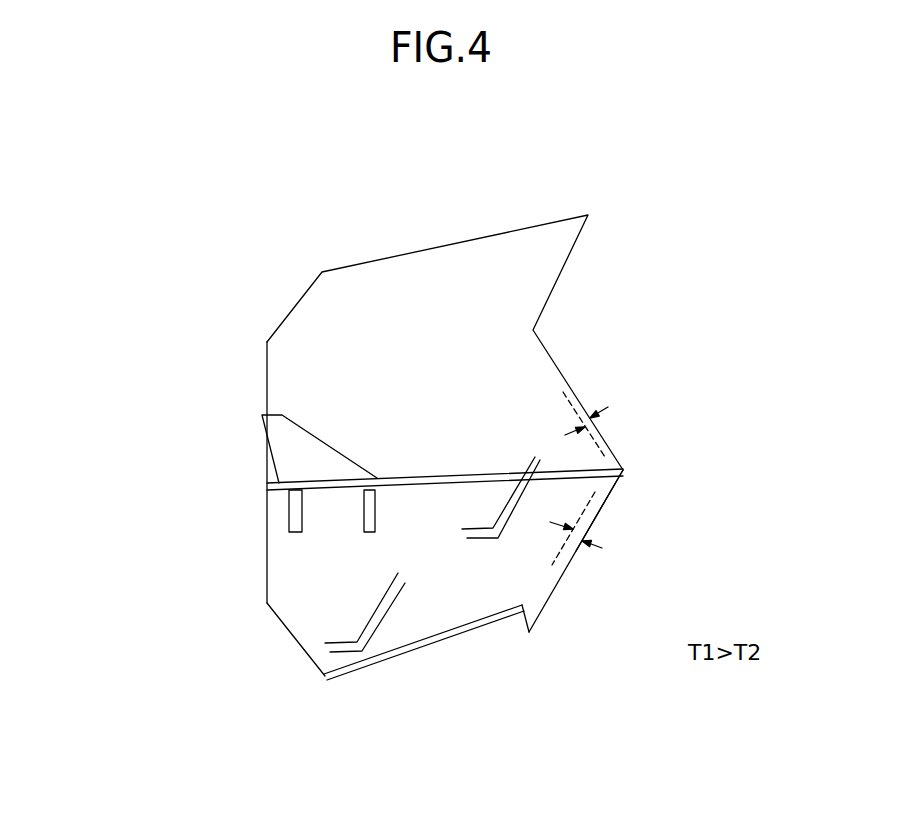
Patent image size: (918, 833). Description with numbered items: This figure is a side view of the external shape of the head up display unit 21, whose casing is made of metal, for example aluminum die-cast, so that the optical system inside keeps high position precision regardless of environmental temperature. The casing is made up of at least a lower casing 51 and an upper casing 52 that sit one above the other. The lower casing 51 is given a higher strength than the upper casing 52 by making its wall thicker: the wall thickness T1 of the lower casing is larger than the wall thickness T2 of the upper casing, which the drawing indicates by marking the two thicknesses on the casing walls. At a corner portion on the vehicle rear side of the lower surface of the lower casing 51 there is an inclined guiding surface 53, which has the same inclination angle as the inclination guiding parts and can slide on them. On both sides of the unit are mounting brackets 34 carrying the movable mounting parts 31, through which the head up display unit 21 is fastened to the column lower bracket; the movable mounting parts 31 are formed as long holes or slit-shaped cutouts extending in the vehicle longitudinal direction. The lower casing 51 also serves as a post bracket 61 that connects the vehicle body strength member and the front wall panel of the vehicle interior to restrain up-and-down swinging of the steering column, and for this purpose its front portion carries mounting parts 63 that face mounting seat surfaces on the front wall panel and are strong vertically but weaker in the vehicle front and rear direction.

The head up display unit 21 is at (423, 240).
The upper casing 52 is at (254, 362).
The mounting parts 63 is at (277, 460).
The lower casing 51 is at (354, 573).
The post bracket 61 is at (252, 550).
The movable mounting parts 31 is at (394, 635).
The mounting brackets 34 is at (367, 617).
The inclined guiding surface 53 is at (600, 518).
The wall thickness of lower casing T1 is at (568, 560).
The wall thickness of upper casing T2 is at (598, 432).